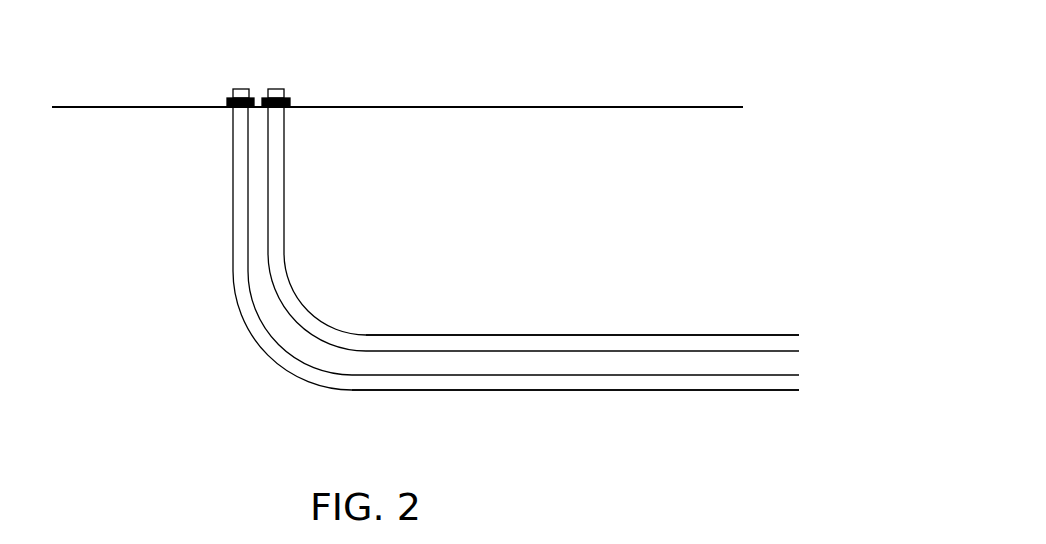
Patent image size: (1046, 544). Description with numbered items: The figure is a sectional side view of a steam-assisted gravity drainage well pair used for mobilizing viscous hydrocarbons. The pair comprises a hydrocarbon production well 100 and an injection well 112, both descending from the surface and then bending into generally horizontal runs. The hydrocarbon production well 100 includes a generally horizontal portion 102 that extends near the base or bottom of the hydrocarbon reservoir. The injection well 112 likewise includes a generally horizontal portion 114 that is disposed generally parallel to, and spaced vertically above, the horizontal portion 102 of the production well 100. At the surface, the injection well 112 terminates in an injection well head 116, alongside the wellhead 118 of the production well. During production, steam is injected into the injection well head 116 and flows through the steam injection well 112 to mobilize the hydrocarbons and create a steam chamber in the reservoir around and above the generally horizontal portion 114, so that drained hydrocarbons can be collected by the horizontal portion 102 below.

The hydrocarbon production well 100 is at (233, 252).
The generally horizontal portion 102 is at (515, 391).
The injection well 112 is at (283, 247).
The generally horizontal portion 114 is at (560, 336).
The injection well head 116 is at (276, 89).
The wellhead 118 is at (240, 89).